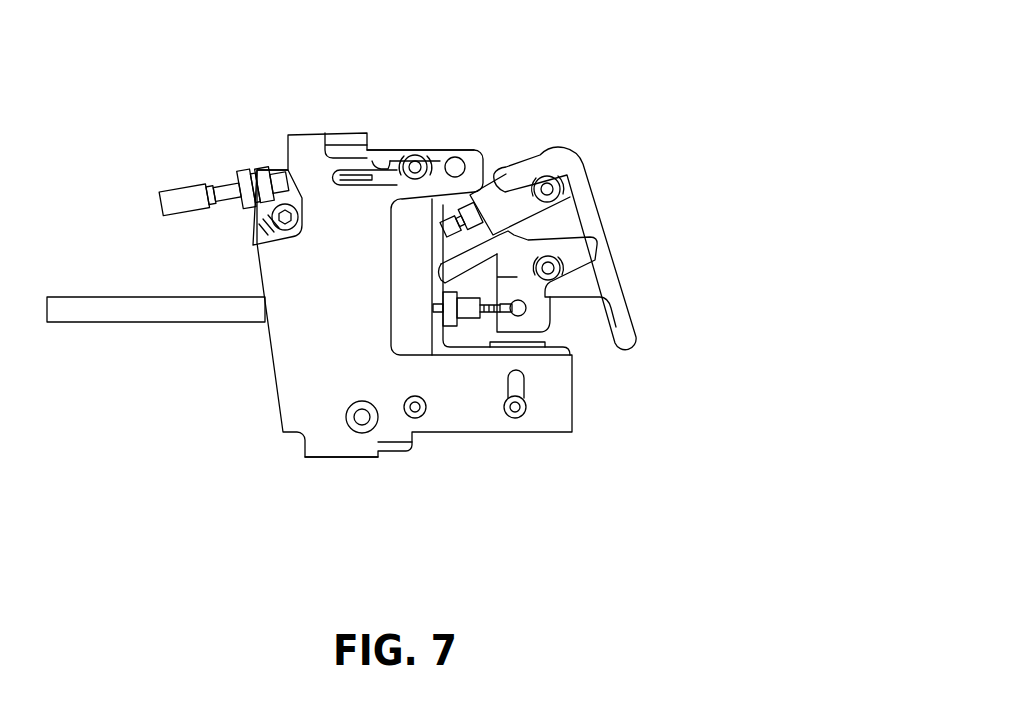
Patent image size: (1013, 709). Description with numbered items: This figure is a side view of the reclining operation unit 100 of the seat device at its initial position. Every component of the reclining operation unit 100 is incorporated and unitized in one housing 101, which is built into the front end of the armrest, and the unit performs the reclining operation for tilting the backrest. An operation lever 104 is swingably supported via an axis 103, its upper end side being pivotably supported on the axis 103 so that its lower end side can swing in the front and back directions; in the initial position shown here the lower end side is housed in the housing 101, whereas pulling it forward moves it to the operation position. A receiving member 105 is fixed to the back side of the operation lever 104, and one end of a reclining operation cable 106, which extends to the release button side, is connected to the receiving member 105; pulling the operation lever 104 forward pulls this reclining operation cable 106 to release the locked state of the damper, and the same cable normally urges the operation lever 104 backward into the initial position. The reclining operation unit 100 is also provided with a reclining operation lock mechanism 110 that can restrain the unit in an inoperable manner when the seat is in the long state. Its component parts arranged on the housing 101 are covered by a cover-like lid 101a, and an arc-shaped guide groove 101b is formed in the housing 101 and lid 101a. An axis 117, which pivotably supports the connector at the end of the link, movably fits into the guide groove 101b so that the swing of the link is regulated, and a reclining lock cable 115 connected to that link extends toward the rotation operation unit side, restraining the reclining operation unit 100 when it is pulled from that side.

The reclining operation unit 100 is at (537, 122).
The housing 101 is at (397, 450).
The lid 101a is at (348, 458).
The guide groove 101b is at (387, 160).
The axis 103 is at (560, 178).
The operation lever 104 is at (596, 242).
The receiving member 105 is at (573, 247).
The reclining operation cable 106 is at (130, 322).
The reclining operation lock mechanism 110 is at (243, 170).
The reclining lock cable 115 is at (177, 190).
The axis 117 is at (425, 154).